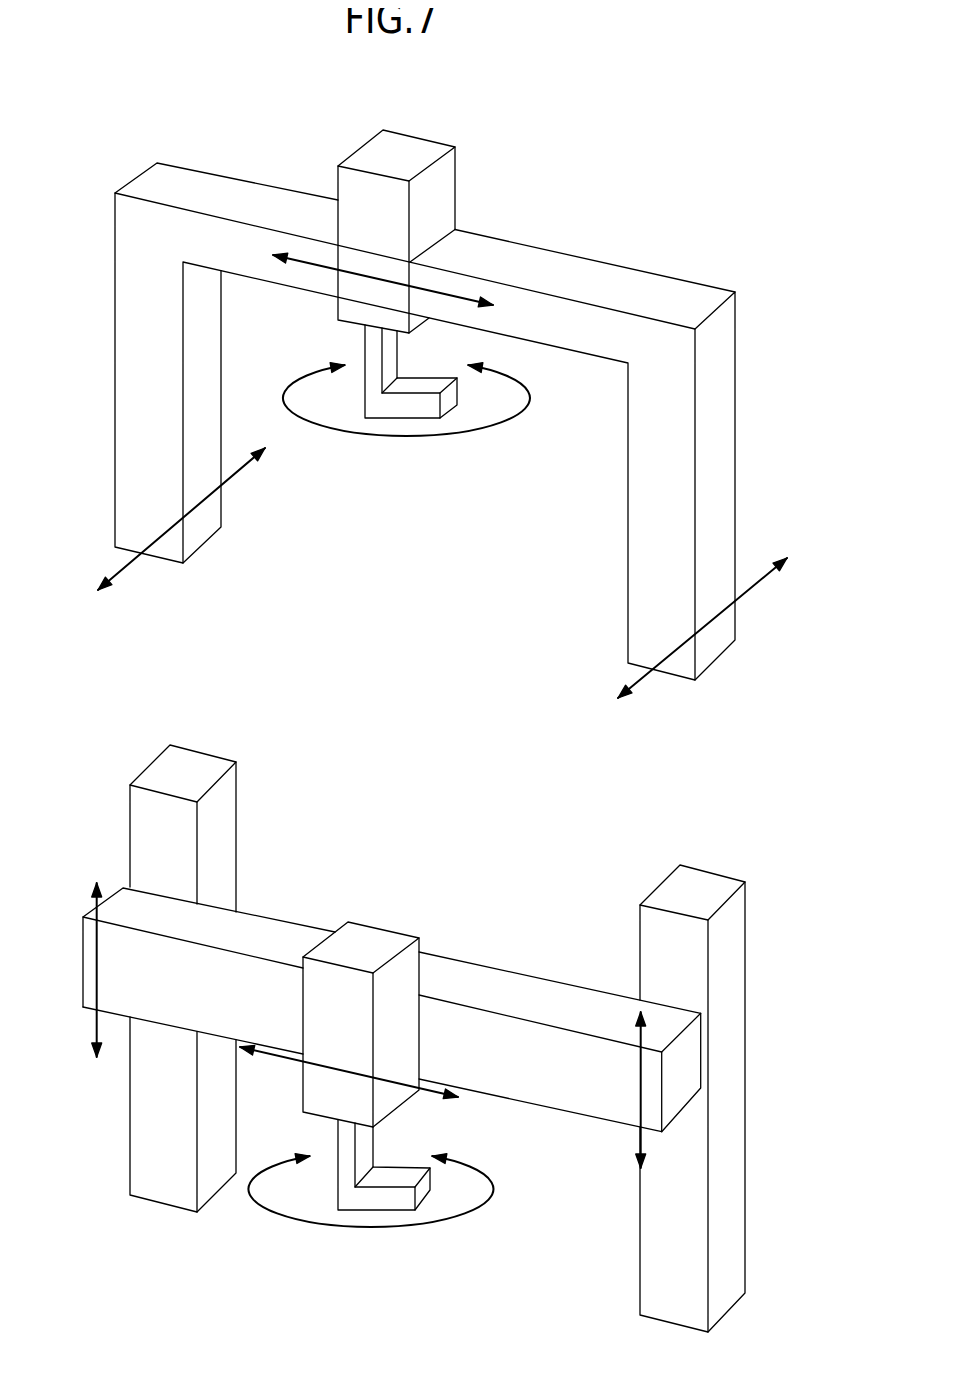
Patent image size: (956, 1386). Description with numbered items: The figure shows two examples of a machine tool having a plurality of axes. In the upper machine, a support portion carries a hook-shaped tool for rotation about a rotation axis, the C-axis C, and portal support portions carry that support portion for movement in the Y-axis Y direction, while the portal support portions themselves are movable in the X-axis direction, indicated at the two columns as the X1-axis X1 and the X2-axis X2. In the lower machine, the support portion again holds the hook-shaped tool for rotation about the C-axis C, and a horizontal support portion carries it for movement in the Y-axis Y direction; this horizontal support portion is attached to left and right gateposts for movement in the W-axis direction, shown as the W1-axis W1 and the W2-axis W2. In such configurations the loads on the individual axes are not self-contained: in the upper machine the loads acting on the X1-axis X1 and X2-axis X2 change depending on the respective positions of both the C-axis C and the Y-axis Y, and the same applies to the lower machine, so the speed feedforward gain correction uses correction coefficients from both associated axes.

The Y-axis Y is at (366, 674).
The C-axis C is at (389, 795).
The X1-axis X1 is at (702, 635).
The X2-axis X2 is at (181, 529).
The W1-axis W1 is at (616, 1091).
The W2-axis W2 is at (110, 995).